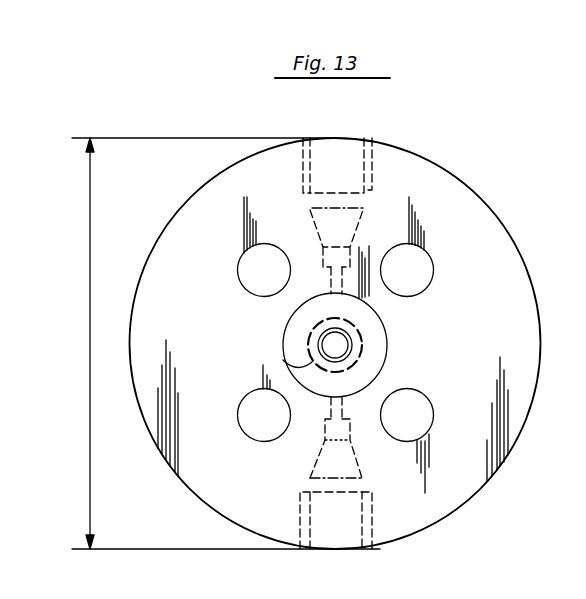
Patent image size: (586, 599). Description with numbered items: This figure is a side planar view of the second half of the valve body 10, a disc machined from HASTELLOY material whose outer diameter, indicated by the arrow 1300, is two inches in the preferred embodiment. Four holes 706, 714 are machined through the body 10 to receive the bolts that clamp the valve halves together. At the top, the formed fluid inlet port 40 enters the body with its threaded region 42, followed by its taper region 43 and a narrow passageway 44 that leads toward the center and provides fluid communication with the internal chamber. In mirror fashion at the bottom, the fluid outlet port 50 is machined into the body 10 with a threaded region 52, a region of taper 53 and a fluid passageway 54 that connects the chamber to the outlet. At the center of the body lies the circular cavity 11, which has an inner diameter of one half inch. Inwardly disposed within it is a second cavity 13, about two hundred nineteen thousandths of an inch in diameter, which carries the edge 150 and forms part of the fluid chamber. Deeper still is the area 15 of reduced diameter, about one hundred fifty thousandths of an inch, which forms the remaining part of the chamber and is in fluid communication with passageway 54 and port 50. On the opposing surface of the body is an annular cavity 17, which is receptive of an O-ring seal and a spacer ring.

The body 10 is at (516, 211).
The circular cavity 11 is at (387, 347).
The inner cavity 13 is at (355, 360).
The area of reduced diameter 15 is at (355, 335).
The annular cavity 17 is at (310, 332).
The edge 150 is at (283, 360).
The fluid inlet port 40 is at (353, 176).
The threaded region 42 is at (374, 165).
The taper region 43 is at (363, 234).
The passageway 44 is at (313, 282).
The fluid outlet port 50 is at (349, 531).
The threaded region 52 is at (302, 515).
The region of taper 53 is at (315, 458).
The fluid passageway 54 is at (345, 403).
The holes 706 is at (435, 269).
The holes 714 is at (241, 280).
The outer diameter 1300 is at (95, 216).